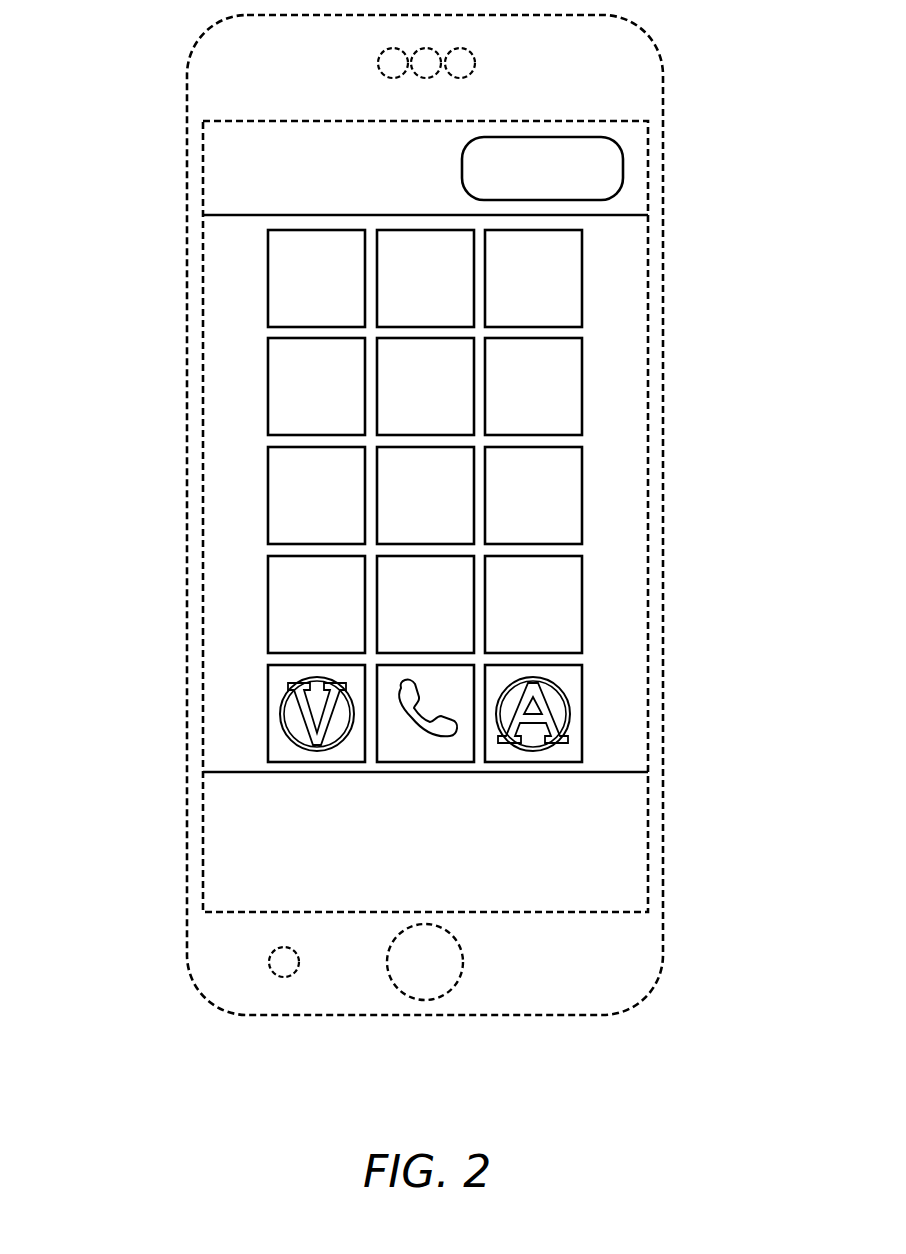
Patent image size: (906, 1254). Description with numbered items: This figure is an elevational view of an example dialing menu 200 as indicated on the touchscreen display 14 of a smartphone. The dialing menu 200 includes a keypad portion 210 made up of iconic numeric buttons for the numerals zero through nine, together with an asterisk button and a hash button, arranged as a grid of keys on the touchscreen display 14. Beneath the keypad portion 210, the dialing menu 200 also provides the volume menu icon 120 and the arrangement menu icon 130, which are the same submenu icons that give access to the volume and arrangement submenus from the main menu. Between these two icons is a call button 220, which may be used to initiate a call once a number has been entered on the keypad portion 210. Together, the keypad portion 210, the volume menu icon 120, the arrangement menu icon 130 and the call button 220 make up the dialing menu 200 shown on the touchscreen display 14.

The touchscreen display 14 is at (648, 293).
The dialing menu 200 is at (648, 830).
The keypad portion 210 is at (248, 230).
The volume menu icon 120 is at (268, 716).
The arrangement menu icon 130 is at (582, 710).
The call button 220 is at (438, 762).